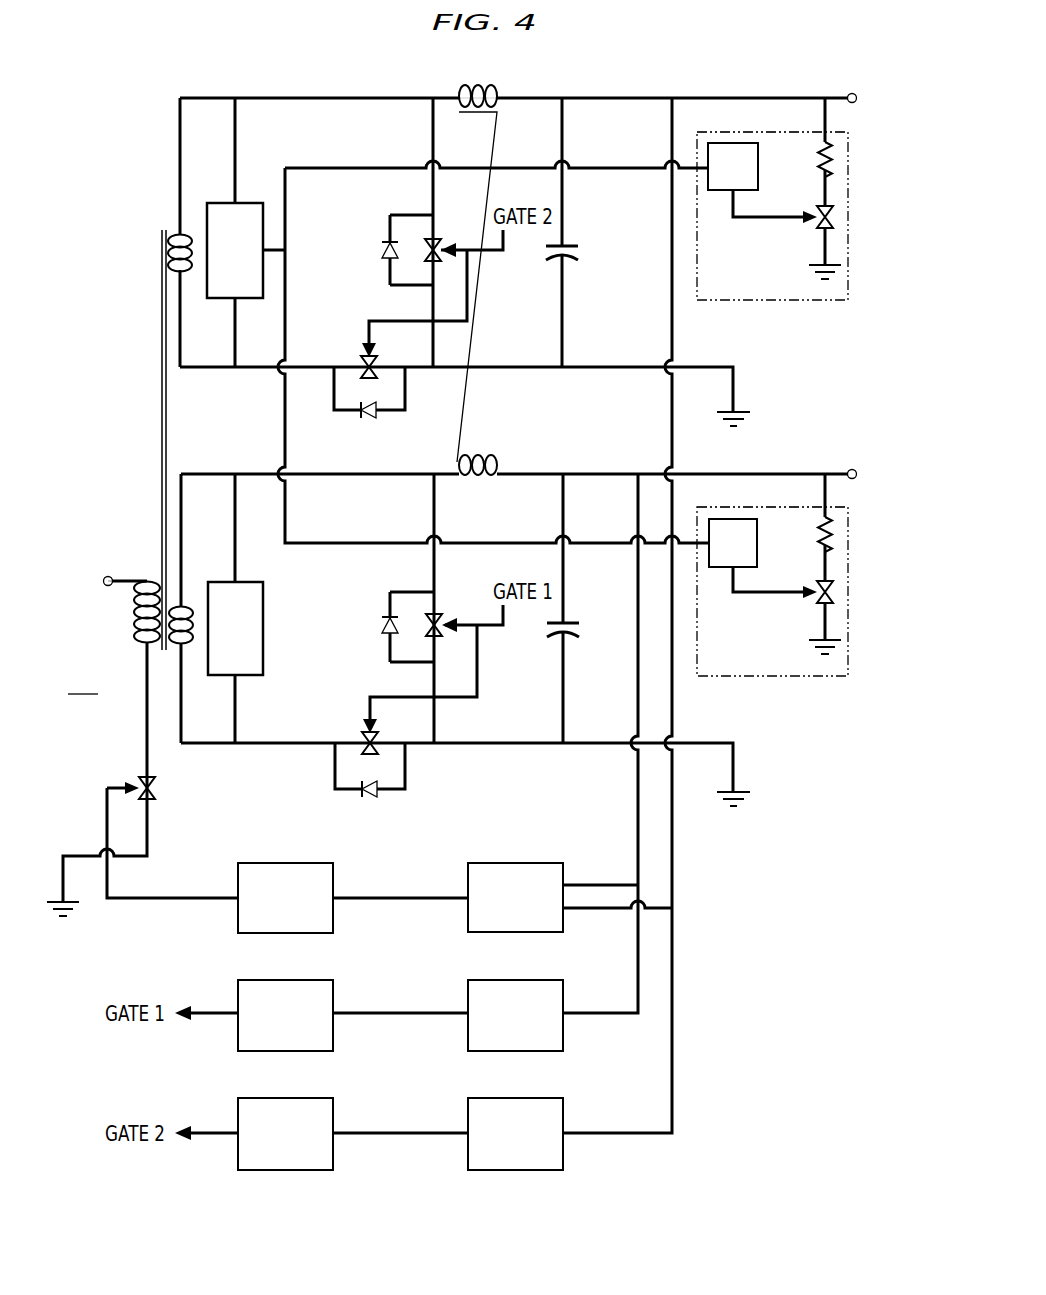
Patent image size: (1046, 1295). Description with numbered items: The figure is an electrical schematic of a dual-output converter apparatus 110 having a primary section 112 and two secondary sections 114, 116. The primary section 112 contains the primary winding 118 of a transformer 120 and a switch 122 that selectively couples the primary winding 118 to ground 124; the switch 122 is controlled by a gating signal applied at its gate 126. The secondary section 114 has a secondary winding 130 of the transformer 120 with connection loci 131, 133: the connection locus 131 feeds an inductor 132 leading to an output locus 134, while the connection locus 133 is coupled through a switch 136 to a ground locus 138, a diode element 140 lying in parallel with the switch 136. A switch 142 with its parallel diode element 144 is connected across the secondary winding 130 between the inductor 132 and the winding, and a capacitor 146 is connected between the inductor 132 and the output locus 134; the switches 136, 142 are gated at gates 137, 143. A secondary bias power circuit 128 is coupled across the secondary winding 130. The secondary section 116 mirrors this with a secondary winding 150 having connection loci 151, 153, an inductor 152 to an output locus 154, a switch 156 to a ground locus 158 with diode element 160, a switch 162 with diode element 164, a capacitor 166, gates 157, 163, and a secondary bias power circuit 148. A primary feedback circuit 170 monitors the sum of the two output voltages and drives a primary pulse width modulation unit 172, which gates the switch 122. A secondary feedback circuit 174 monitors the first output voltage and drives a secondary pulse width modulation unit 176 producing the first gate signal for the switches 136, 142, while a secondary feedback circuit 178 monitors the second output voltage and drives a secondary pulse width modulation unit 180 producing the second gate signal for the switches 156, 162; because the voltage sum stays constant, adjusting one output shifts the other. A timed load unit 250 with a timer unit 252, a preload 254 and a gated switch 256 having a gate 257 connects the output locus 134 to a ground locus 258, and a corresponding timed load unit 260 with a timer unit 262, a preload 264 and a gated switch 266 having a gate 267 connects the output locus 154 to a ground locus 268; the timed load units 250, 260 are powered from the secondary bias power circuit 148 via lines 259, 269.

The converter apparatus 110 is at (107, 638).
The primary section 112 is at (124, 96).
The secondary section 114 is at (866, 664).
The secondary section 116 is at (866, 290).
The primary winding 118 is at (133, 616).
The transformer 120 is at (162, 392).
The switch 122 is at (156, 788).
The ground 124 is at (62, 918).
The gate 126 is at (114, 788).
The secondary bias power circuit 128 is at (250, 582).
The secondary winding 130 is at (190, 612).
The connection locus 131 is at (181, 522).
The inductor 132 is at (497, 460).
The connection locus 133 is at (181, 718).
The output locus 134 is at (856, 470).
The switch 136 is at (381, 750).
The gate 137 is at (362, 726).
The ground locus 138 is at (748, 796).
The diode element 140 is at (368, 798).
The switch 142 is at (440, 614).
The gate 143 is at (470, 636).
The diode element 144 is at (382, 626).
The capacitor 146 is at (580, 630).
The secondary bias power circuit 148 is at (250, 203).
The secondary winding 150 is at (178, 234).
The connection locus 151 is at (180, 146).
The inductor 152 is at (497, 88).
The connection locus 153 is at (180, 300).
The output locus 154 is at (856, 94).
The switch 156 is at (380, 374).
The gate 157 is at (362, 350).
The ground locus 158 is at (748, 416).
The diode element 160 is at (368, 420).
The switch 162 is at (438, 238).
The gate 163 is at (470, 262).
The diode element 164 is at (382, 250).
The capacitor 166 is at (580, 254).
The primary feedback circuit 170 is at (500, 863).
The primary pulse width modulation unit 172 is at (284, 863).
The secondary feedback circuit 174 is at (512, 980).
The secondary pulse width modulation unit 176 is at (274, 980).
The secondary feedback circuit 178 is at (512, 1098).
The secondary pulse width modulation unit 180 is at (274, 1098).
The timed load unit 250 is at (768, 676).
The timer unit 252 is at (758, 548).
The preload 254 is at (832, 528).
The gated switch 256 is at (832, 598).
The gate 257 is at (803, 600).
The ground locus 258 is at (806, 644).
The line 259 is at (604, 544).
The timed load unit 260 is at (768, 300).
The timer unit 262 is at (758, 168).
The preload 264 is at (832, 152).
The gated switch 266 is at (832, 222).
The gate 267 is at (803, 224).
The ground locus 268 is at (806, 268).
The line 269 is at (604, 170).